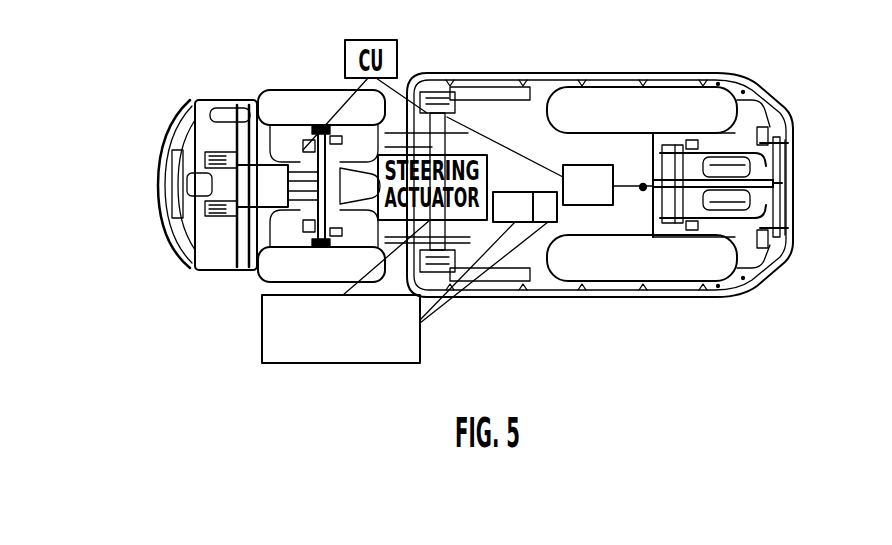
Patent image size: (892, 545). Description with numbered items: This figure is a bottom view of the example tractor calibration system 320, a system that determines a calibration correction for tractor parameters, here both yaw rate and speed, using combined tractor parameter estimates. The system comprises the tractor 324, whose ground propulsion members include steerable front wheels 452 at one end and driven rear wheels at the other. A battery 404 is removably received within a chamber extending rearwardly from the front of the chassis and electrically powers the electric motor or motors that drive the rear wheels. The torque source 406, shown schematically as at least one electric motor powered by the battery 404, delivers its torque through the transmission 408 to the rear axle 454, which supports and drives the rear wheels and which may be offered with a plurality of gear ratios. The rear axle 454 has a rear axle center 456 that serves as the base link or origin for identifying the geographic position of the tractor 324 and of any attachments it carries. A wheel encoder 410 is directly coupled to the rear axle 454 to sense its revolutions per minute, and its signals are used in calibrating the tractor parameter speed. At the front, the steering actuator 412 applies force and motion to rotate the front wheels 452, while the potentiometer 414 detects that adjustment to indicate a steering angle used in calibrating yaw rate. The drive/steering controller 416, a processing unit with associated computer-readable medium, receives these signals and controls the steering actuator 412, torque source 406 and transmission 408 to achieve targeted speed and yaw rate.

The tractor calibration system 320 is at (104, 126).
The tractor 324 is at (673, 67).
The battery 404 is at (160, 188).
The torque source 406 is at (504, 192).
The transmission 408 is at (547, 240).
The wheel encoder 410 is at (600, 165).
The steering actuator 412 is at (305, 235).
The potentiometer 414 is at (237, 190).
The drive/steering controller 416 is at (350, 363).
The front wheels 452 is at (290, 97).
The rear axle 454 is at (643, 224).
The rear axle center 456 is at (643, 183).